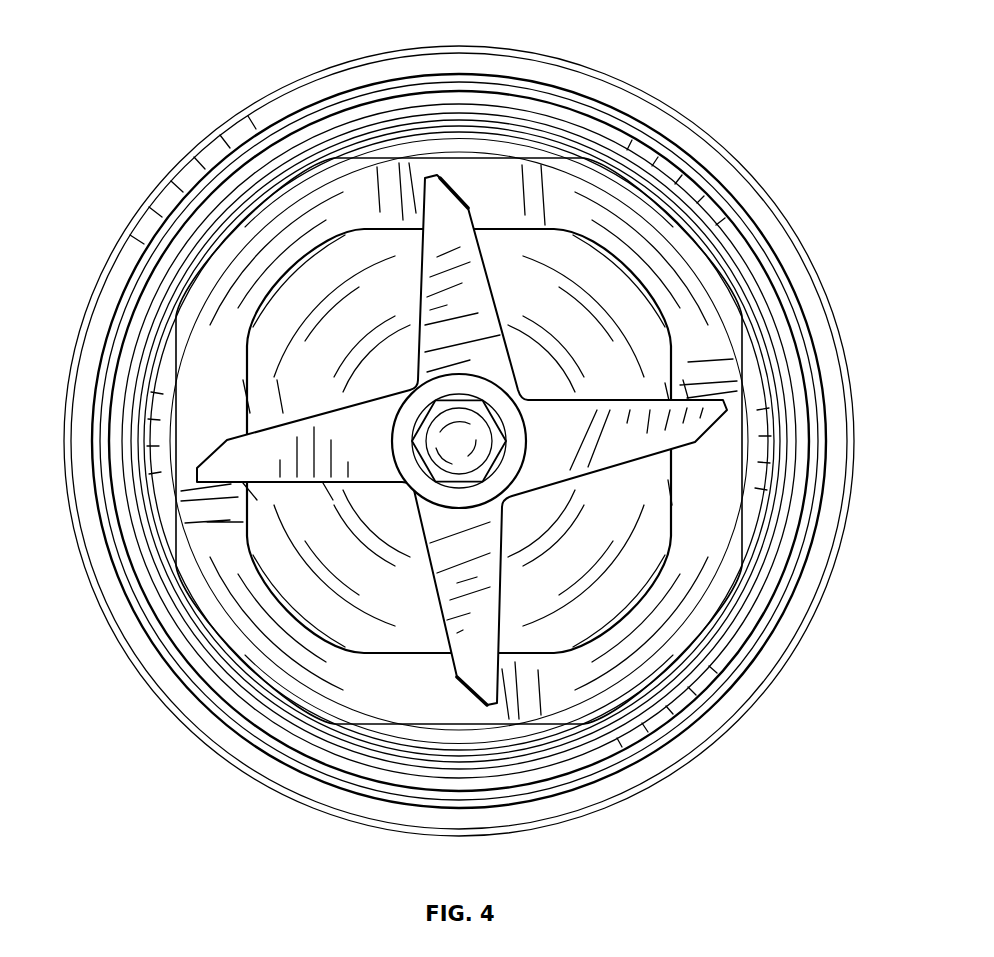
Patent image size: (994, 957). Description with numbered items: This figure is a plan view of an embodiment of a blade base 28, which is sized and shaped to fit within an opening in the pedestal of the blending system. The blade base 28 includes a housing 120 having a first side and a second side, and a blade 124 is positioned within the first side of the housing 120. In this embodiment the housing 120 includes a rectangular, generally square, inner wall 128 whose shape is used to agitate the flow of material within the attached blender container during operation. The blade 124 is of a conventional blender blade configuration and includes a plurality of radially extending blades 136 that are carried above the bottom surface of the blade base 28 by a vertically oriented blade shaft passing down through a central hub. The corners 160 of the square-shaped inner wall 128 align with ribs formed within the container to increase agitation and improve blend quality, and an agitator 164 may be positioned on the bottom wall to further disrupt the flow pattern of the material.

The blade base 28 is at (143, 97).
The housing 120 is at (805, 247).
The blade 124 is at (470, 414).
The inner wall 128 is at (752, 423).
The radially extending blades 136 is at (442, 197).
The corners 160 is at (230, 220).
The agitator 164 is at (538, 530).